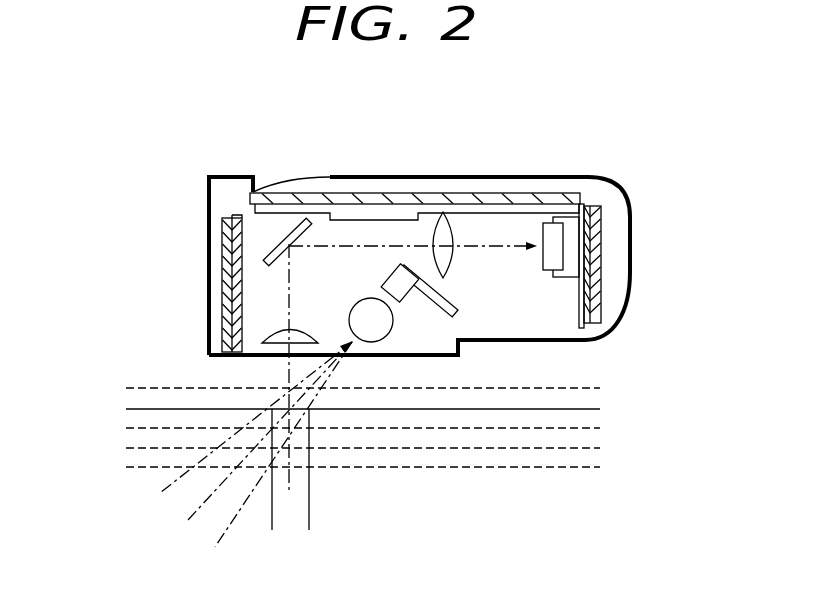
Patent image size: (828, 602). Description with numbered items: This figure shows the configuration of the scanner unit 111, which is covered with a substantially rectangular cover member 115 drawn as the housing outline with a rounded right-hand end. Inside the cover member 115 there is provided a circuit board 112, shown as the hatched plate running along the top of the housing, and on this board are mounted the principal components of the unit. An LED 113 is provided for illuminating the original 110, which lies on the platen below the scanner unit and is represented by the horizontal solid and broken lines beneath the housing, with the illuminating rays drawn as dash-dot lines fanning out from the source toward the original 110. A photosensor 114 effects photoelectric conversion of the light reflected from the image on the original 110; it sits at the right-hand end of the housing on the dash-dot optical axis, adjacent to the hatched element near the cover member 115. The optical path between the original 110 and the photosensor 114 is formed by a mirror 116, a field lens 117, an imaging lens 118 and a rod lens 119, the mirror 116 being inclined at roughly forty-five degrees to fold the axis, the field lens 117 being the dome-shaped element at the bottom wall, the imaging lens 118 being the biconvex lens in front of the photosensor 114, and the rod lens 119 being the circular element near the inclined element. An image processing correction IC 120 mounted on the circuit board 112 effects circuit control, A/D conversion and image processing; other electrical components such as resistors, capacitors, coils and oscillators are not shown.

The original 110 is at (137, 409).
The scanner unit 111 is at (647, 182).
The circuit board 112 is at (226, 291).
The LED 113 is at (462, 305).
The photosensor 114 is at (547, 224).
The cover member 115 is at (632, 263).
The mirror 116 is at (272, 250).
The field lens 117 is at (280, 343).
The imaging lens 118 is at (452, 228).
The rod lens 119 is at (378, 331).
The image processing correction IC 120 is at (368, 214).